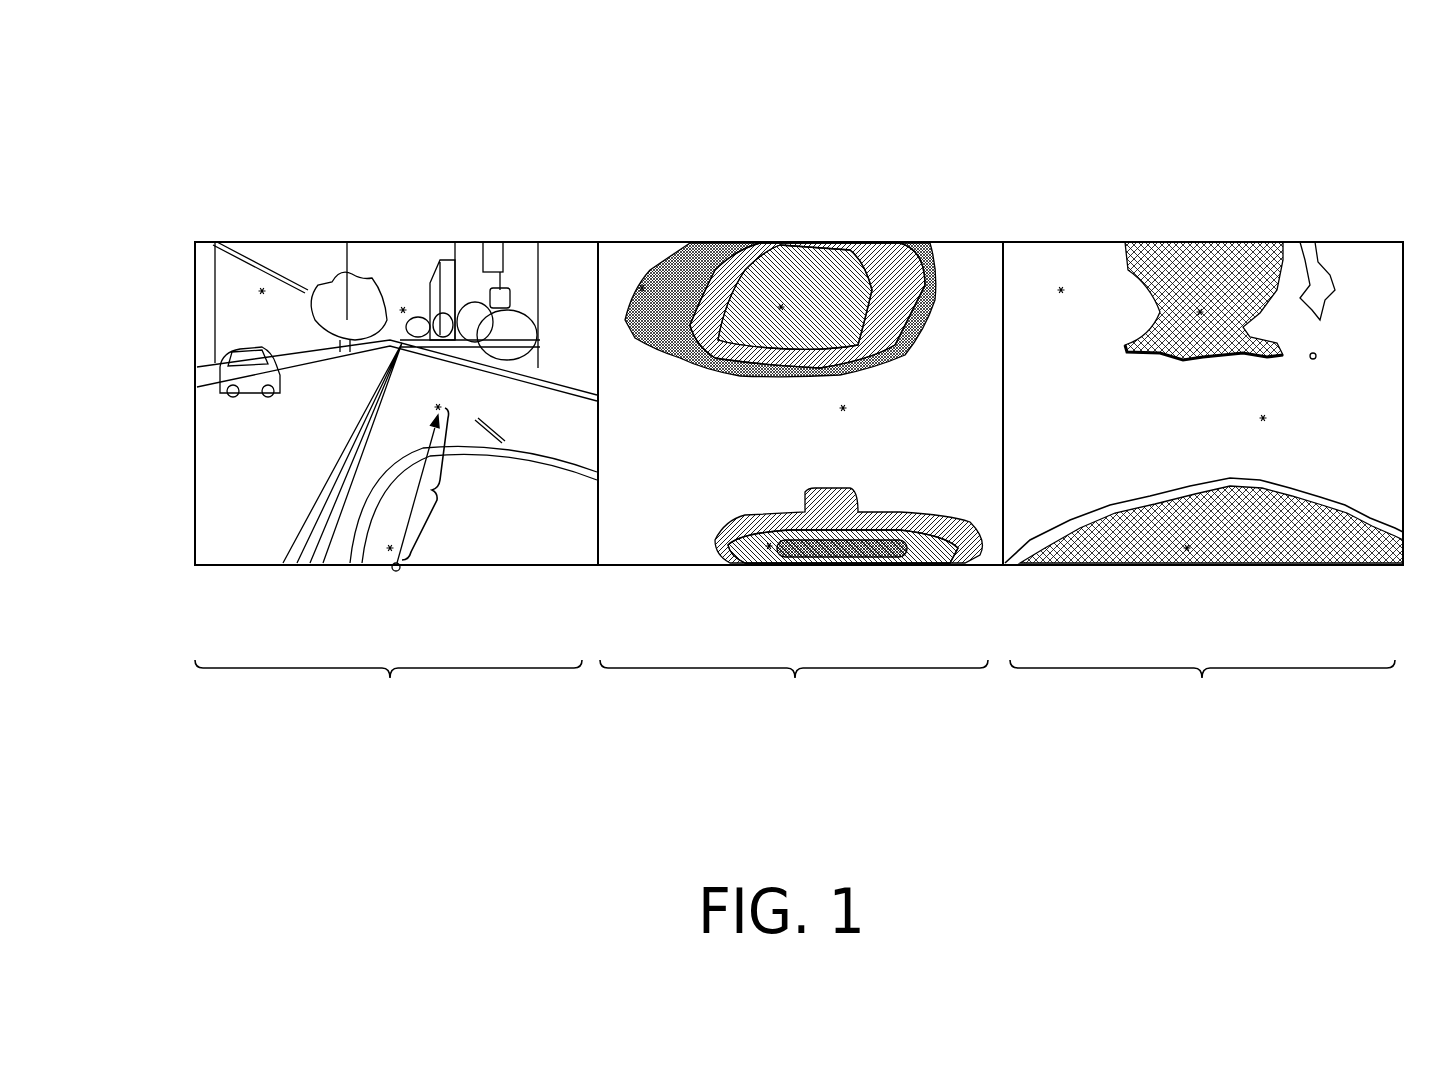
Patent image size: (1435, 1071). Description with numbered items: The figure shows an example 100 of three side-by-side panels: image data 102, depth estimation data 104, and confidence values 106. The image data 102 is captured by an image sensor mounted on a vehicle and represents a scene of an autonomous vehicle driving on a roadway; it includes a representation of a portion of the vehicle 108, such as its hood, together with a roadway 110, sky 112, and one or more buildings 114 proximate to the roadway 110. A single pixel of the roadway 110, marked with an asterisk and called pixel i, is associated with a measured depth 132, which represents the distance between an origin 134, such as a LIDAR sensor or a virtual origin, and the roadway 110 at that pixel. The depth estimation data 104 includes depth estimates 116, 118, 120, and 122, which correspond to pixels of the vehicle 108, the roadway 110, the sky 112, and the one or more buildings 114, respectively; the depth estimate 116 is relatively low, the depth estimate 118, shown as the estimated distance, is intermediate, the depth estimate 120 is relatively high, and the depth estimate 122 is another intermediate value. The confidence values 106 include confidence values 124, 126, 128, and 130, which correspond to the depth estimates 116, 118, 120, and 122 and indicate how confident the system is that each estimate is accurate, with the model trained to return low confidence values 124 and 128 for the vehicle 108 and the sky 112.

The example 100 is at (191, 72).
The image data 102 is at (396, 489).
The depth estimation data 104 is at (794, 489).
The confidence values 106 is at (1204, 489).
The vehicle 108 is at (377, 548).
The roadway 110 is at (423, 409).
The sky 112 is at (390, 312).
The one or more buildings 114 is at (248, 291).
The depth estimate 116 is at (763, 566).
The depth estimate 118 is at (833, 413).
The depth estimate 120 is at (784, 288).
The depth estimate 122 is at (643, 268).
The confidence value 124 is at (1198, 562).
The confidence value 126 is at (1254, 422).
The confidence value 128 is at (1201, 292).
The confidence value 130 is at (1062, 265).
The measured depth 132 is at (474, 485).
The origin 134 is at (399, 572).